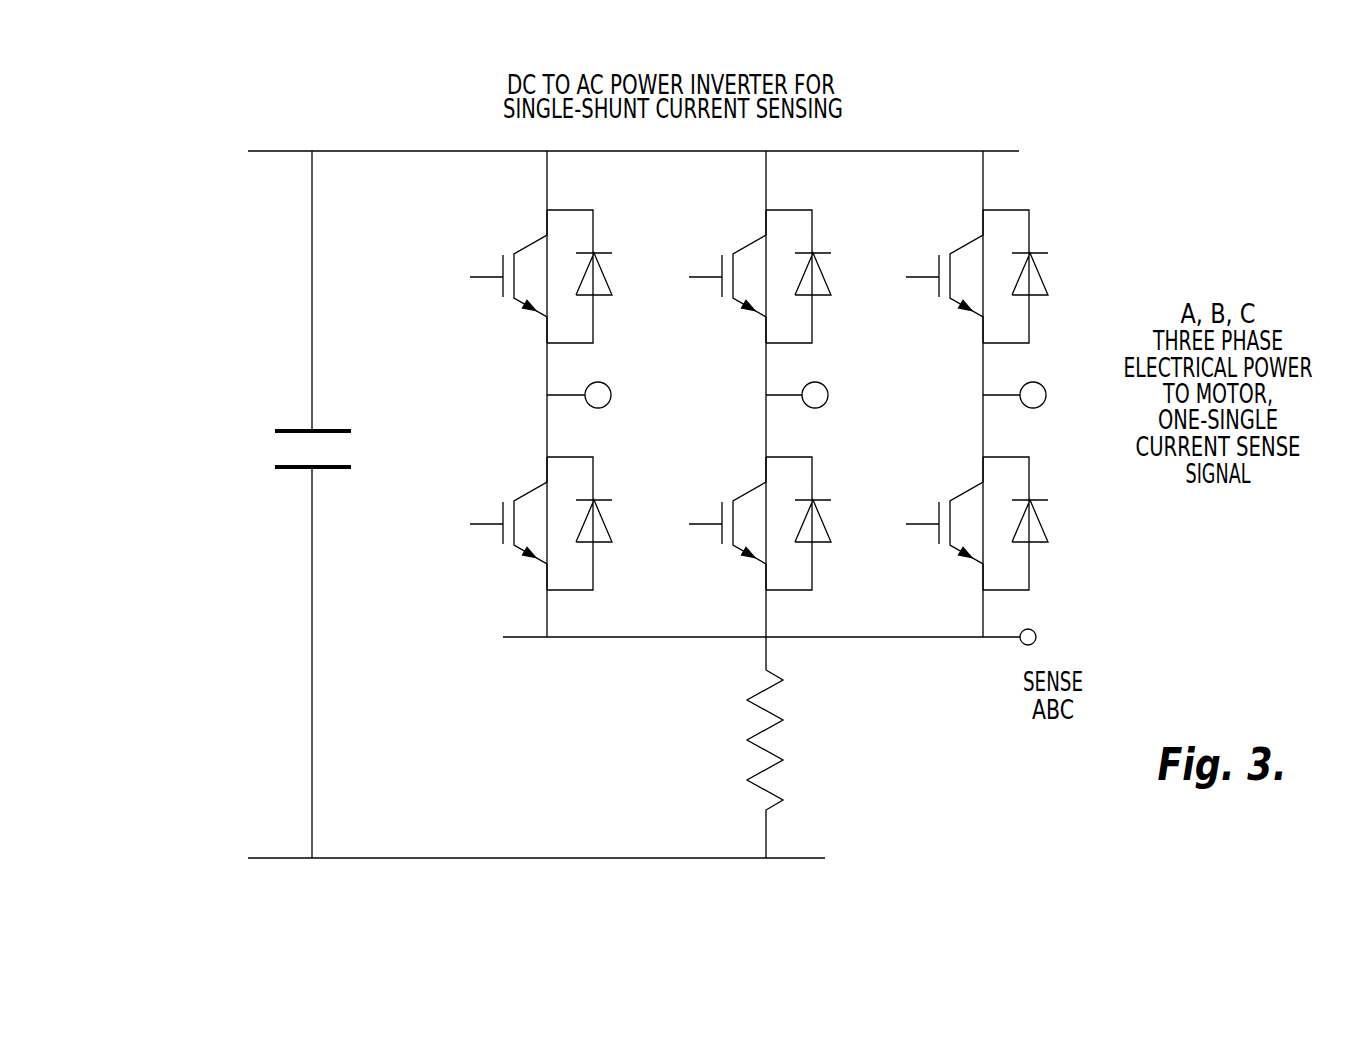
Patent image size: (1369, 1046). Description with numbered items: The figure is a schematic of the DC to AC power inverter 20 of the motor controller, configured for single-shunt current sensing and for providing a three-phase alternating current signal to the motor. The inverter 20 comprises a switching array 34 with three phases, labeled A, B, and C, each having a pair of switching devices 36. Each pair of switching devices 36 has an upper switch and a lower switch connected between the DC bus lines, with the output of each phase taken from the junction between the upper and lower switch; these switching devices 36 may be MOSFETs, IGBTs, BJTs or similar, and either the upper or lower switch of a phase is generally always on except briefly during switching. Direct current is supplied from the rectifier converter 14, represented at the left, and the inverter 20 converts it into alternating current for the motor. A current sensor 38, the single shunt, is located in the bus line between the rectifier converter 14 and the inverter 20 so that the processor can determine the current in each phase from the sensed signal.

The AC to DC rectifier converter 14 is at (312, 295).
The DC to AC power inverter 20 is at (948, 137).
The switching array 34 is at (1047, 173).
The switching devices 36 is at (532, 243).
The current sensor 38 is at (773, 725).